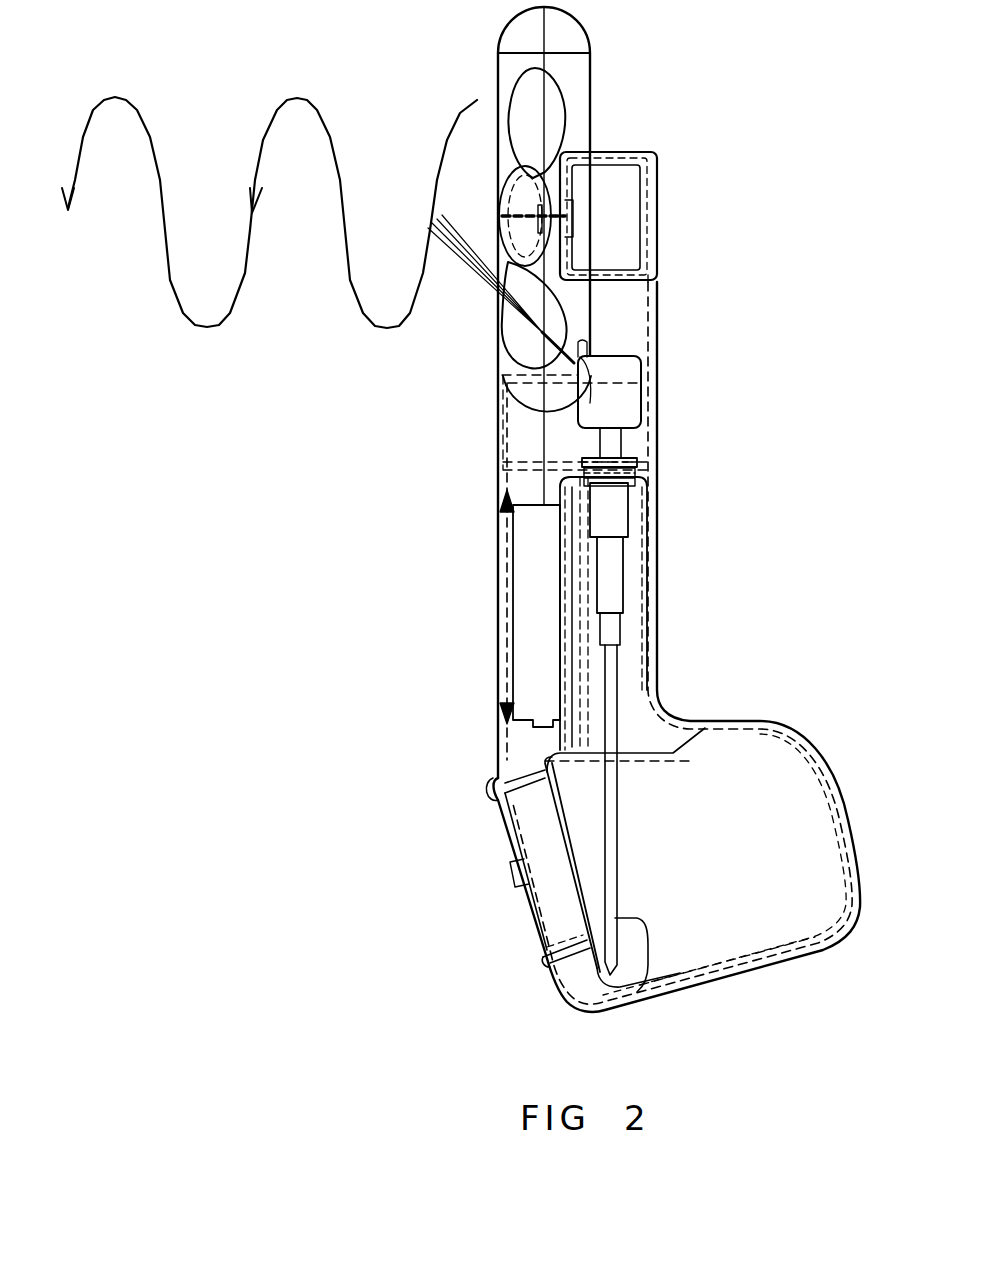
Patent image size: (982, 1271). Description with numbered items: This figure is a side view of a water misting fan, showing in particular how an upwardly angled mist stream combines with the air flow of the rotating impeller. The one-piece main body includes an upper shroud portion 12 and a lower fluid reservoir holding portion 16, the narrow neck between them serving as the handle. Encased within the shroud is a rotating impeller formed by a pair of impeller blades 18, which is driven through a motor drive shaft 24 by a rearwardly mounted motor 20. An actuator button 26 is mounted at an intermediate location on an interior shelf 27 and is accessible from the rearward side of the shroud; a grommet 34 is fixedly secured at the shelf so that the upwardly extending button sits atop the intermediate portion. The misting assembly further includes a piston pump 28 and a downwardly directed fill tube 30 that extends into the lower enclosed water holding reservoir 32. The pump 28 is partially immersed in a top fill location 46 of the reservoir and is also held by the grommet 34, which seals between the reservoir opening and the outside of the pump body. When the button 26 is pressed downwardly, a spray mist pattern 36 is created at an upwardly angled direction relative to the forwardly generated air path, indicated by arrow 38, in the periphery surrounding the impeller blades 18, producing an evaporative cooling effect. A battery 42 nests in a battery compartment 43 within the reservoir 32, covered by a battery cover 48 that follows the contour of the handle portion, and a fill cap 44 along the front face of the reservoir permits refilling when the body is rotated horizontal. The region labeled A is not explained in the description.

The upper shroud portion 12 is at (630, 150).
The lower fluid reservoir holding portion 16 is at (743, 720).
The impeller blades 18 is at (523, 107).
The motor 20 is at (610, 217).
The motor drive shaft 24 is at (525, 190).
The actuator button 26 is at (618, 363).
The interior shelf 27 is at (530, 468).
The pump 28 is at (605, 545).
The fill tube 30 is at (640, 993).
The water holding reservoir 32 is at (775, 869).
The grommet 34 is at (633, 450).
The spray mist pattern 36 is at (447, 240).
The air path arrow 38 is at (267, 140).
The battery 42 is at (528, 586).
The battery nesting area 43 is at (507, 650).
The fill cap 44 is at (507, 855).
The top fill location 46 is at (580, 570).
The battery cover 48 is at (497, 680).
The region A is at (622, 524).